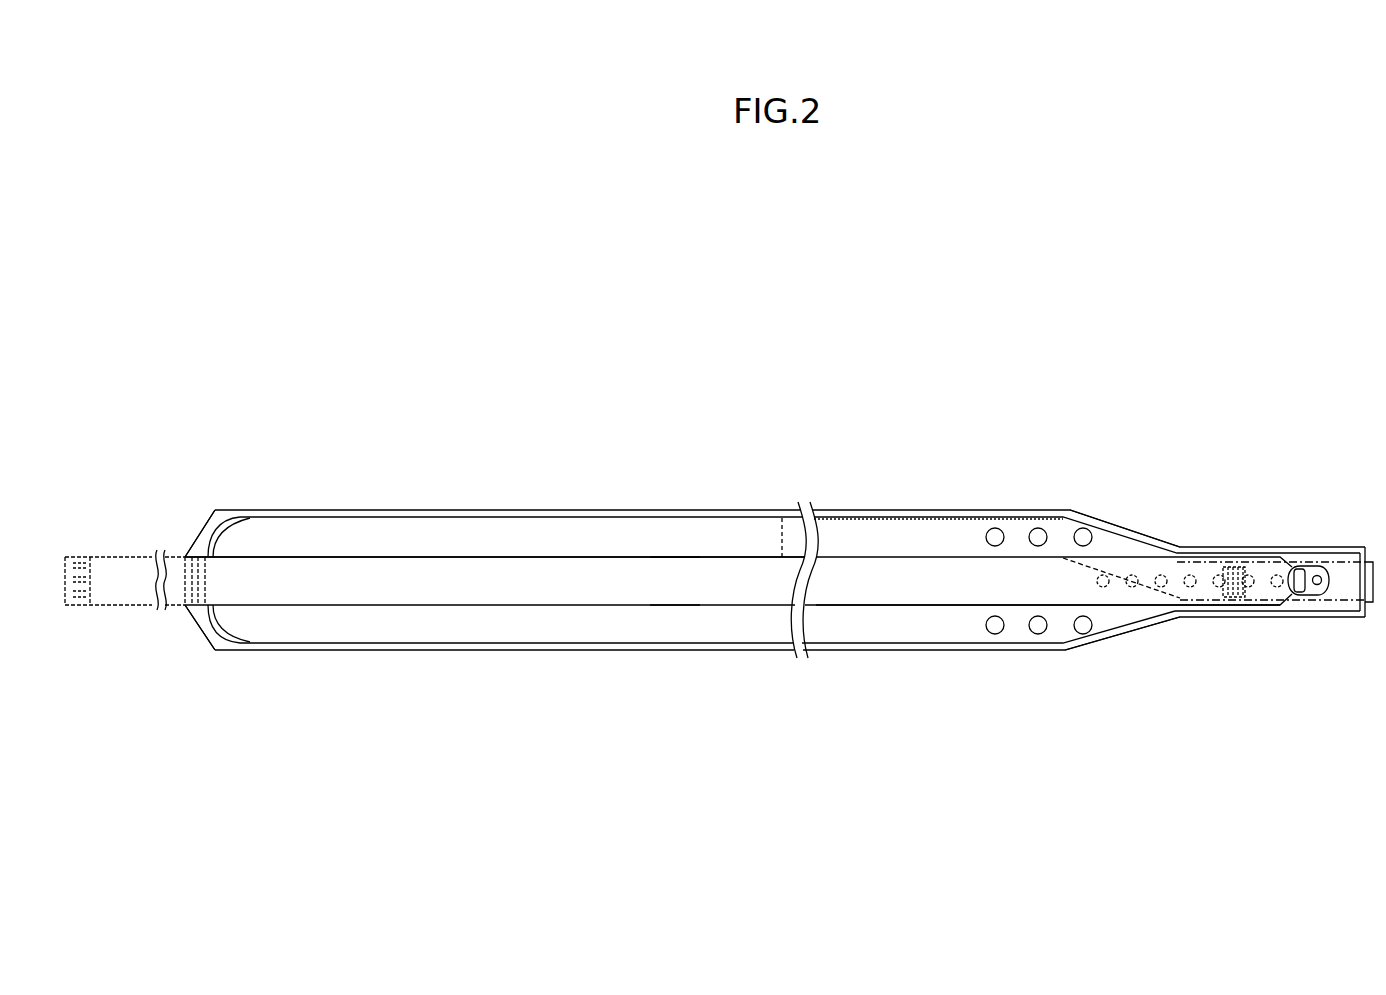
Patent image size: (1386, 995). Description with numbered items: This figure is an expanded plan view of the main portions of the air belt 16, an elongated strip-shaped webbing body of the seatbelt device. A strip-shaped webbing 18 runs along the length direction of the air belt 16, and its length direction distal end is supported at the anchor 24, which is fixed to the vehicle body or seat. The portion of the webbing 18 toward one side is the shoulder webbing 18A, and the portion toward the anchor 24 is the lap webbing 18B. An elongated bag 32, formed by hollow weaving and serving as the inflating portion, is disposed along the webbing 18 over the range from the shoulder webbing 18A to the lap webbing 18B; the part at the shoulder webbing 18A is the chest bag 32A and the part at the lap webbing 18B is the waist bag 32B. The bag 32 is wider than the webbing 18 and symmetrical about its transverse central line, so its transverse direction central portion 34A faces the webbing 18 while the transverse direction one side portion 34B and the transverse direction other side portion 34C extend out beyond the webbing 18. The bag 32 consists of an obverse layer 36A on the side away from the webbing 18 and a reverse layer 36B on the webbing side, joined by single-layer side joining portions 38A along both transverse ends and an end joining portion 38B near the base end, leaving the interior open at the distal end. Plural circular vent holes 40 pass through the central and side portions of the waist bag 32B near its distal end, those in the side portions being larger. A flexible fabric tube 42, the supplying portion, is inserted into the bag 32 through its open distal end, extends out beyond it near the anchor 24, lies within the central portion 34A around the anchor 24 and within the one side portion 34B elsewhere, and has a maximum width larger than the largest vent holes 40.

The air belt 16 is at (378, 394).
The webbing 18 is at (492, 557).
The shoulder webbing 18A is at (480, 604).
The lap webbing 18B is at (965, 604).
The anchor 24 is at (1313, 566).
The bag 32 is at (341, 510).
The chest bag 32A is at (407, 650).
The waist bag 32B is at (913, 650).
The transverse direction central portion 34A is at (583, 575).
The transverse direction one side portion 34B is at (670, 532).
The transverse direction other side portion 34C is at (670, 632).
The obverse layer 36A is at (340, 633).
The reverse layer 36B is at (842, 632).
The side joining portions 38A is at (875, 510).
The end joining portion 38B is at (198, 535).
The vent holes 40 is at (987, 537).
The tube 42 is at (930, 518).